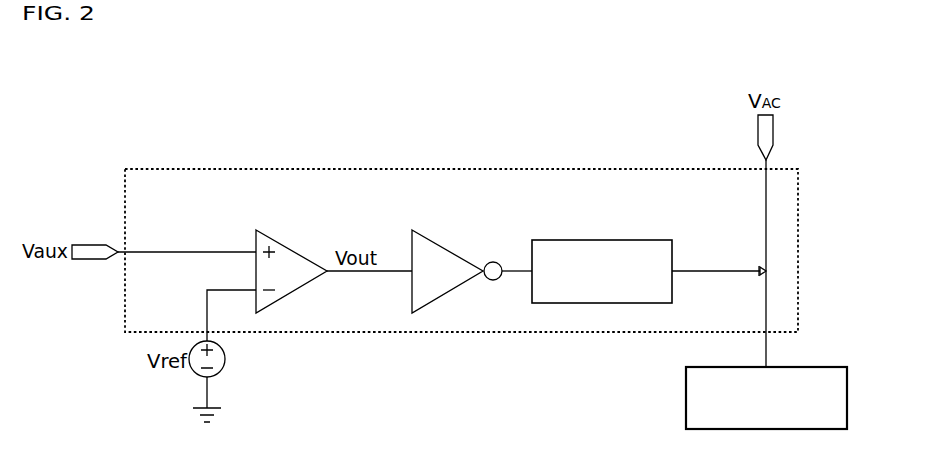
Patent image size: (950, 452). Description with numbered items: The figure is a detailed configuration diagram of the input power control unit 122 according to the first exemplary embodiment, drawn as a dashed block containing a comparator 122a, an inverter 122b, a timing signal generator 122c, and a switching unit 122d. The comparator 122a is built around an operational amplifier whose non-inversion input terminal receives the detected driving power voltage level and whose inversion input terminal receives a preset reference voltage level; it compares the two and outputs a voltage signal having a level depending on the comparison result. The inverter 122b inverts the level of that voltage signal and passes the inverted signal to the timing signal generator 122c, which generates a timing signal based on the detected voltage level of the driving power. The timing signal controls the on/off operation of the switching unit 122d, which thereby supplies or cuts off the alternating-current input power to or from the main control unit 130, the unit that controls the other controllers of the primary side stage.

The input power control unit 122 is at (462, 169).
The comparator 122a is at (286, 241).
The inverter 122b is at (441, 241).
The timing signal generator 122c is at (603, 240).
The switching unit 122d is at (762, 274).
The main control unit 130 is at (686, 401).